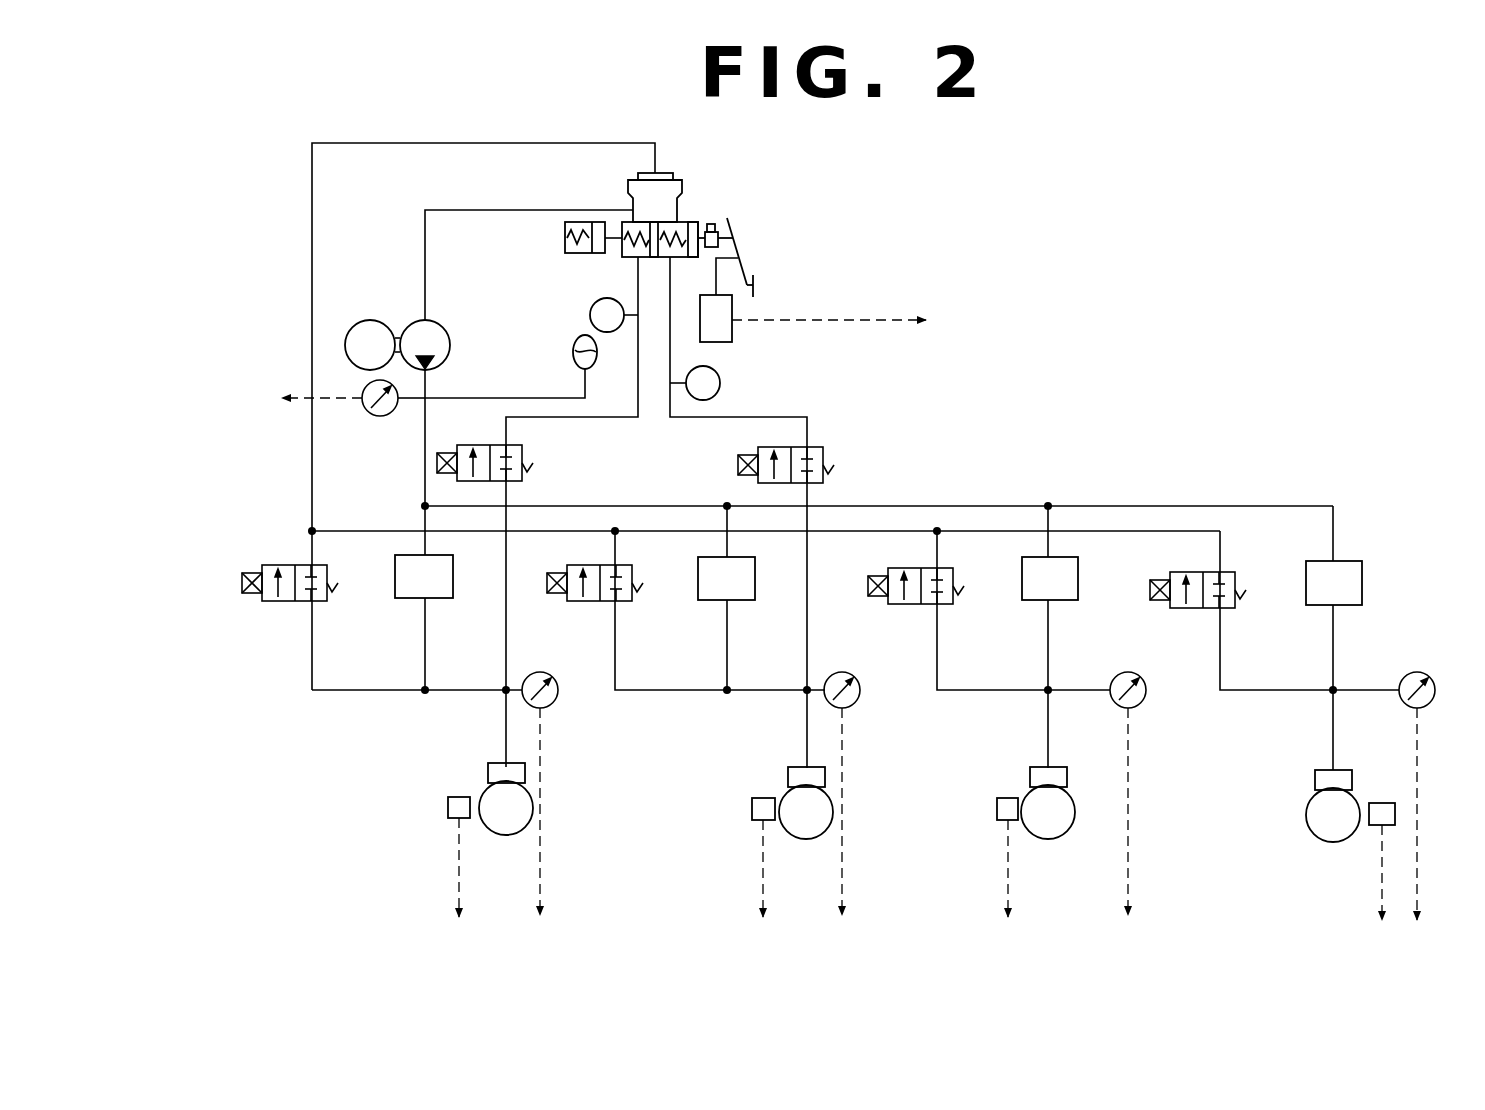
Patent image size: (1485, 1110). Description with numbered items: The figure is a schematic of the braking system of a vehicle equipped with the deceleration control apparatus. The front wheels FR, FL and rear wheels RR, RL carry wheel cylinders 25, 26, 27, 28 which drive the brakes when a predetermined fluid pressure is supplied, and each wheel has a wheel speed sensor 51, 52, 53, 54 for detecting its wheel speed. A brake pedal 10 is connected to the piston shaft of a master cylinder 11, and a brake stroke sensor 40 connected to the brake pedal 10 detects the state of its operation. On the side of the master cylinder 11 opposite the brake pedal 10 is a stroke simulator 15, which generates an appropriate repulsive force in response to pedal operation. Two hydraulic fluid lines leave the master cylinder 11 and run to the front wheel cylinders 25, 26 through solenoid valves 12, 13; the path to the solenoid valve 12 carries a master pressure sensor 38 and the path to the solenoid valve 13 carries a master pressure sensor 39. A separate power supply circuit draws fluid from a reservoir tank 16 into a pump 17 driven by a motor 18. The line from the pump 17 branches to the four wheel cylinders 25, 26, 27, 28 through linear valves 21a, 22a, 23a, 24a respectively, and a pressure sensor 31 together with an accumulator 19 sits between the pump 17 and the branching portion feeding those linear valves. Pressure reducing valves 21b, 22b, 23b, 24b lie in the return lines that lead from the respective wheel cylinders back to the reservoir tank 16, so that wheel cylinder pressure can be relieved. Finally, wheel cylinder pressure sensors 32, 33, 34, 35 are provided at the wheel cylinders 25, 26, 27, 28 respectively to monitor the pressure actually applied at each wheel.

The brake pedal 10 is at (738, 248).
The master cylinder 11 is at (630, 258).
The solenoid valve 12 is at (535, 452).
The solenoid valve 13 is at (835, 466).
The stroke simulator 15 is at (565, 244).
The reservoir tank 16 is at (688, 186).
The pump 17 is at (446, 330).
The motor 18 is at (372, 320).
The accumulator 19 is at (574, 354).
The linear valve 21a is at (412, 600).
The pressure reducing valve 21b is at (270, 605).
The linear valve 22a is at (712, 603).
The pressure reducing valve 22b is at (595, 605).
The linear valve 23a is at (1032, 602).
The pressure reducing valve 23b is at (915, 607).
The linear valve 24a is at (1316, 606).
The pressure reducing valve 24b is at (1192, 609).
The wheel cylinder 25 is at (486, 775).
The wheel cylinder 26 is at (788, 776).
The wheel cylinder 27 is at (1030, 776).
The wheel cylinder 28 is at (1315, 780).
The pressure sensor 31 is at (378, 416).
The wheel cylinder pressure sensor 32 is at (555, 700).
The wheel cylinder pressure sensor 33 is at (858, 700).
The wheel cylinder pressure sensor 34 is at (1145, 700).
The wheel cylinder pressure sensor 35 is at (1417, 672).
The master pressure sensor 38 is at (590, 315).
The master pressure sensor 39 is at (720, 383).
The brake stroke sensor 40 is at (735, 330).
The wheel speed sensor 51 is at (448, 808).
The wheel speed sensor 52 is at (752, 810).
The wheel speed sensor 53 is at (997, 812).
The wheel speed sensor 54 is at (1382, 803).